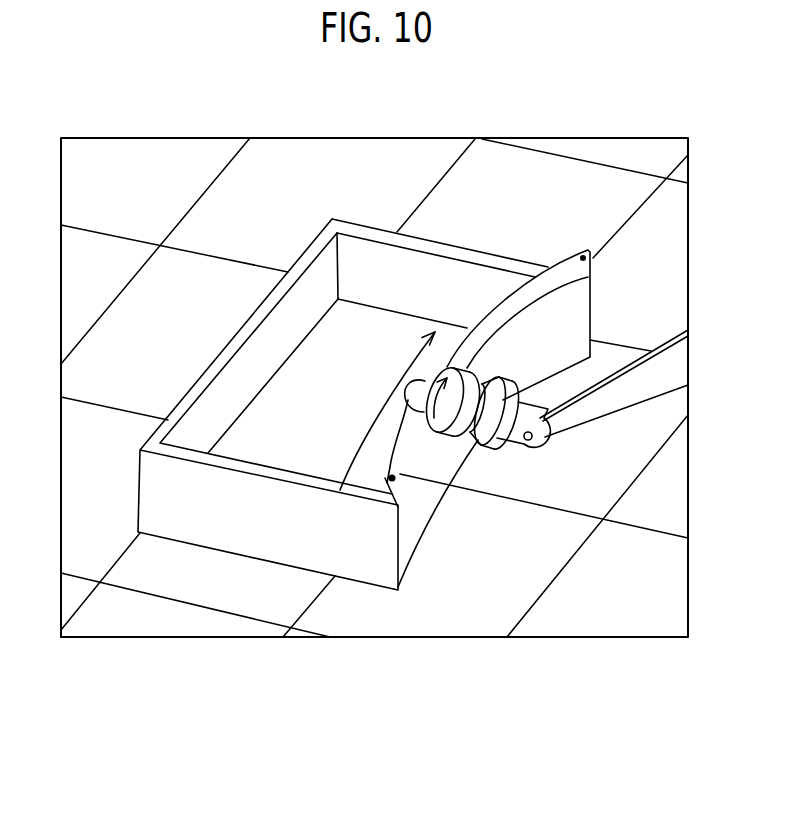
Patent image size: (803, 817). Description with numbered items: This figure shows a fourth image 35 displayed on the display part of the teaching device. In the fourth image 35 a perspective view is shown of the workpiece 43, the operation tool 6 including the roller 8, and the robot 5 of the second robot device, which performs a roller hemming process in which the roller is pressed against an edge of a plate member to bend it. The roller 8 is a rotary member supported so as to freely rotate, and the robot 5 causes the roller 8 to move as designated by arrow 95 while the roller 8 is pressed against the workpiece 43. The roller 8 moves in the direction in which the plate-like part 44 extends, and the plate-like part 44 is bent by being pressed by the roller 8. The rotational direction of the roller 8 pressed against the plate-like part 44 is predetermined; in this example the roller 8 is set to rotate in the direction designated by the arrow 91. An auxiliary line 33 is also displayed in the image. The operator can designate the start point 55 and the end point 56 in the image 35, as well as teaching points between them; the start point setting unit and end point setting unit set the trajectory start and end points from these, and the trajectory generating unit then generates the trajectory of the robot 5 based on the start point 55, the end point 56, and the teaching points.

The auxiliary line 33 is at (250, 138).
The fourth image 35 is at (636, 137).
The workpiece 43 is at (195, 532).
The plate-like part 44 is at (522, 292).
The end point 56 is at (583, 258).
The start point 55 is at (392, 478).
The robot 5 is at (645, 387).
The operation tool 6 is at (474, 440).
The roller 8 is at (428, 435).
The arrow 91 is at (412, 430).
The arrow 95 is at (340, 490).